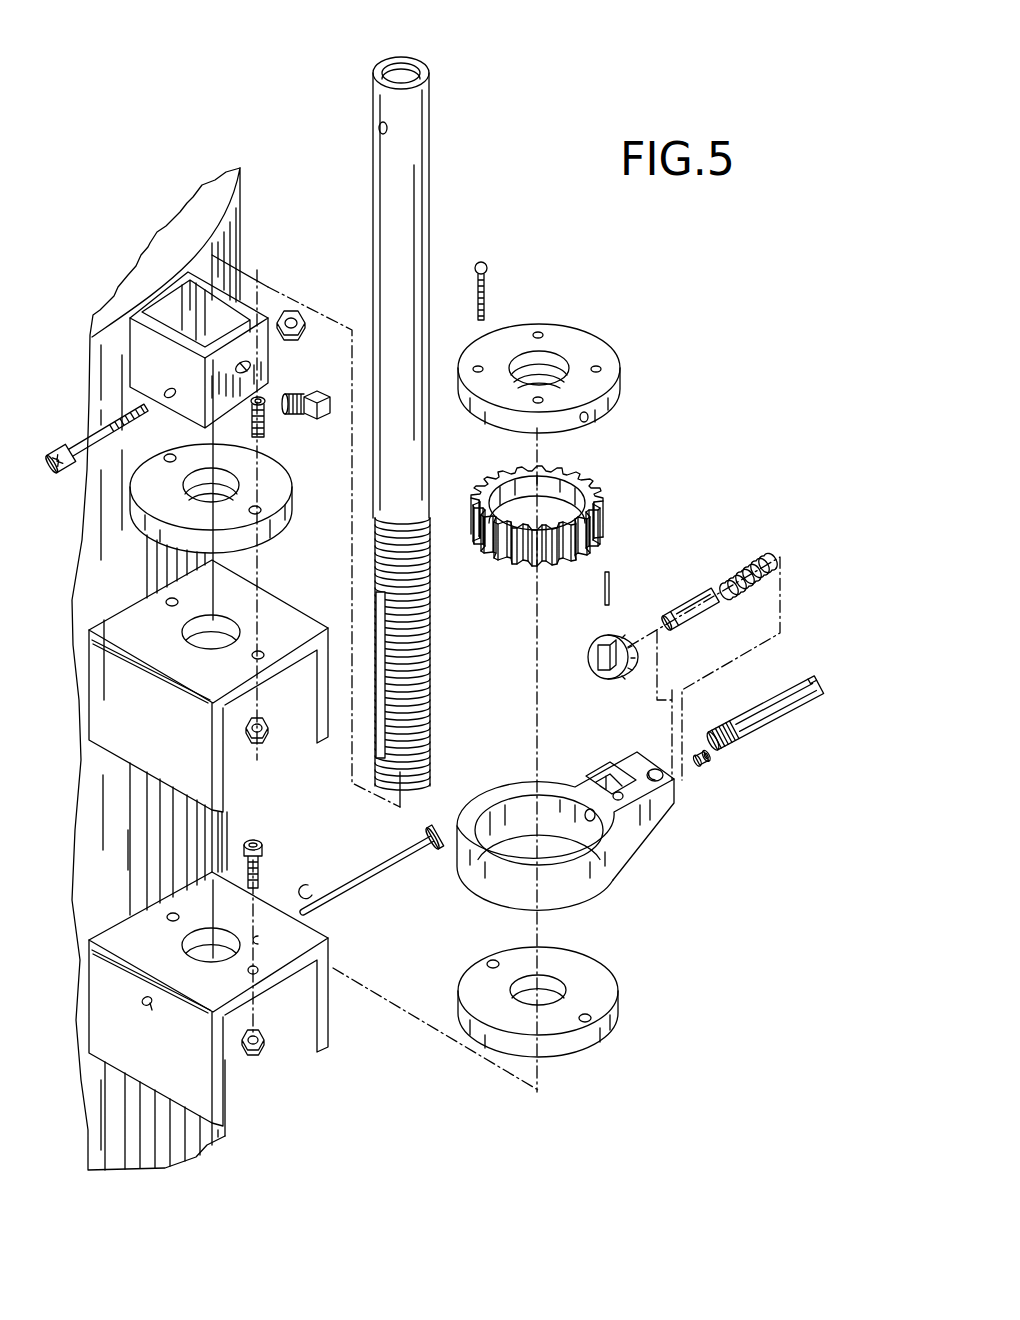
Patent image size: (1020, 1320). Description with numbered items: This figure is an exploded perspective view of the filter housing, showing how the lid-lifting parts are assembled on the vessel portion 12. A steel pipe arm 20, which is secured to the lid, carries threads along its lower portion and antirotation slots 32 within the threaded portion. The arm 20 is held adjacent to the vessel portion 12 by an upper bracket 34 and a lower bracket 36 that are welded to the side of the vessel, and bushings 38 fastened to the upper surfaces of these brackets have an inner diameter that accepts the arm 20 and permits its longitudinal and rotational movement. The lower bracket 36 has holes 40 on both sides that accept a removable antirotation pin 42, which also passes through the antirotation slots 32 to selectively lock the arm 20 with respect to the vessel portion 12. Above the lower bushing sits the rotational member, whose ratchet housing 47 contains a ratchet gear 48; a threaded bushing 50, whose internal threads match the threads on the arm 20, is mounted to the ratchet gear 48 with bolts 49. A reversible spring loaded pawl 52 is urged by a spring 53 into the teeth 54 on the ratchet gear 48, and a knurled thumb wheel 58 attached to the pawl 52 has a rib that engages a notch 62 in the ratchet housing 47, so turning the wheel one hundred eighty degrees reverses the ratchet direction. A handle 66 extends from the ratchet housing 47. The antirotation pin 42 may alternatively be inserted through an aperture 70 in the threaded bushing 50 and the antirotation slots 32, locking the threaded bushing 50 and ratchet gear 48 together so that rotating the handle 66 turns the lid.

The vessel portion 12 is at (100, 836).
The arm 20 is at (418, 264).
The antirotation slots 32 is at (376, 606).
The upper bracket 34 is at (128, 742).
The lower bracket 36 is at (303, 1048).
The bushings 38 is at (273, 460).
The holes 40 is at (150, 1006).
The antirotation pin 42 is at (414, 862).
The ratchet housing 47 is at (580, 817).
The ratchet gear 48 is at (567, 542).
The bolts 49 is at (488, 270).
The threaded bushing 50 is at (618, 382).
The pawl 52 is at (686, 598).
The spring 53 is at (748, 562).
The teeth 54 is at (578, 560).
The knurled thumb wheel 58 is at (614, 634).
The notch 62 is at (583, 778).
The handle 66 is at (793, 692).
The aperture 70 is at (590, 420).